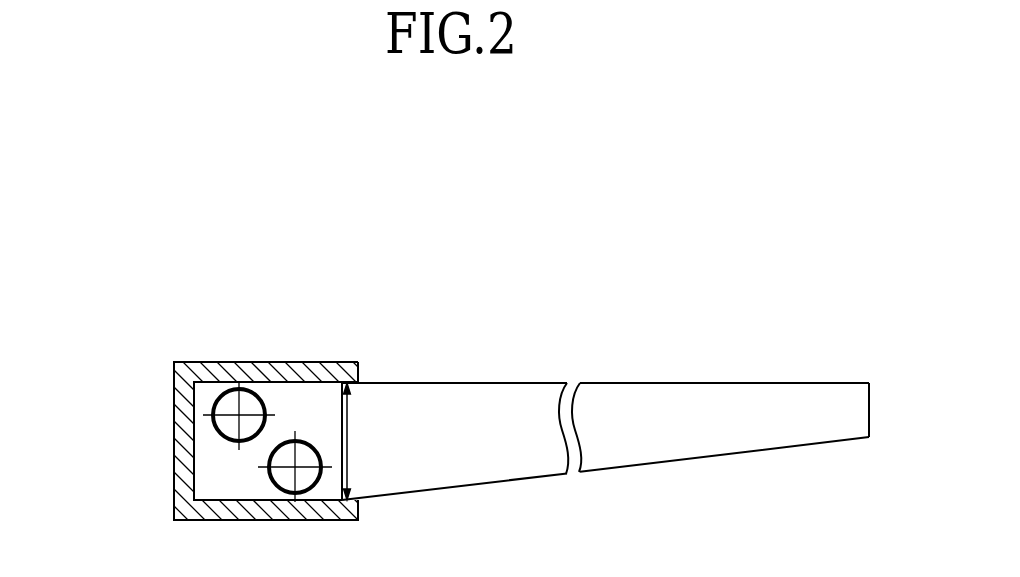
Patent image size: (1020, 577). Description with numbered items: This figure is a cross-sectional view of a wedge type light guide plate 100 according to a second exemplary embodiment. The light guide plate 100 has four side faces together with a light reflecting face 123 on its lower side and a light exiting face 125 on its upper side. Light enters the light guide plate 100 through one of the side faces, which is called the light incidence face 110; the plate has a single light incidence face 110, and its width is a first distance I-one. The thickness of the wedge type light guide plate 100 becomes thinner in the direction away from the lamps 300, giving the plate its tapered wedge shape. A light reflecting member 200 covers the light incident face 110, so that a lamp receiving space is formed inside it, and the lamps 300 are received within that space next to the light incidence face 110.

The wedge type light guide plate 100 is at (605, 400).
The light incidence face 110 is at (348, 445).
The light reflecting face 123 is at (500, 485).
The light exiting face 125 is at (497, 382).
The light reflecting member 200 is at (167, 425).
The lamps 300 is at (215, 443).